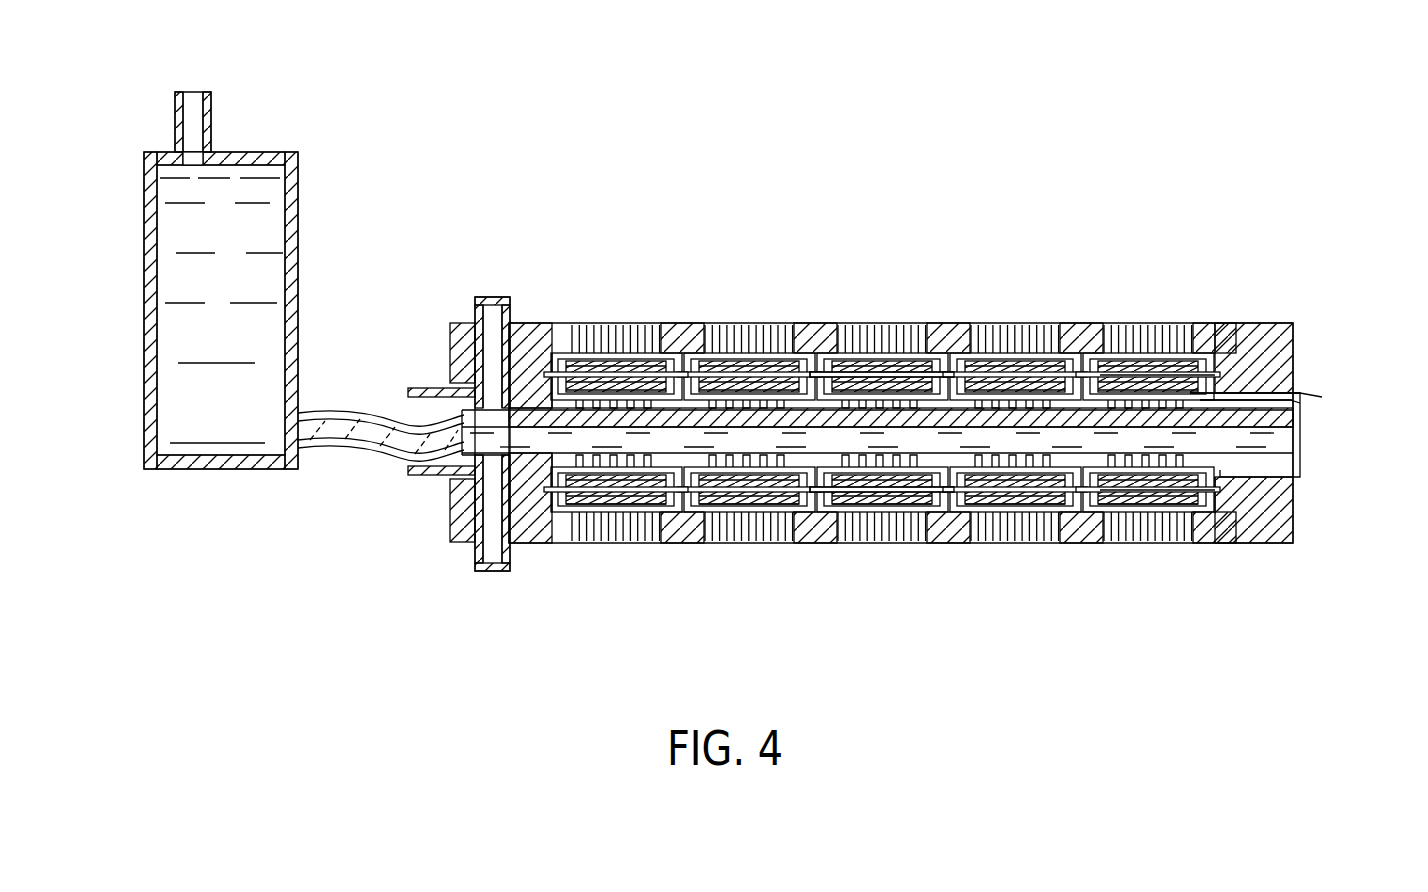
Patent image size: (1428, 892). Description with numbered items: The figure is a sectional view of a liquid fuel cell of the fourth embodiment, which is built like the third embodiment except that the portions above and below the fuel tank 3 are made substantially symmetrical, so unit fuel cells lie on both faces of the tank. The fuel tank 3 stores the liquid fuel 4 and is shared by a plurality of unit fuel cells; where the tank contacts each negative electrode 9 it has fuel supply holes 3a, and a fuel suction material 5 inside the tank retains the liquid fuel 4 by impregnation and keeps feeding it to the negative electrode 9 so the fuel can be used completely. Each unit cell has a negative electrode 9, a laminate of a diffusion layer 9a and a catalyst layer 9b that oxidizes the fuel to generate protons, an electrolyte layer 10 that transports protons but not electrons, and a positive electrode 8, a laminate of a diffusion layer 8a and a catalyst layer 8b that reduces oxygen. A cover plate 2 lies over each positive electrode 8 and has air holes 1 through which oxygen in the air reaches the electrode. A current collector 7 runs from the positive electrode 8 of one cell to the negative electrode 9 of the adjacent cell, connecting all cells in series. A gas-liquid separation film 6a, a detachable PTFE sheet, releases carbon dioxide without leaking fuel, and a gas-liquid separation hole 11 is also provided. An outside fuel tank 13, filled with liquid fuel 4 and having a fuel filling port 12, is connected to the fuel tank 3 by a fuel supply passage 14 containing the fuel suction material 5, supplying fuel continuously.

The air holes 1 is at (603, 323).
The cover plate 2 is at (683, 325).
The fuel tank 3 is at (1295, 498).
The fuel supply holes 3a is at (880, 323).
The liquid fuel 4 is at (168, 215).
The fuel suction material 5 is at (328, 440).
The gas-liquid separation film 6a is at (487, 300).
The current collector 7 is at (420, 390).
The positive electrode 8 is at (1255, 276).
The diffusion layer 8a is at (1155, 323).
The catalyst layer 8b is at (1215, 323).
The negative electrode 9 is at (1427, 420).
The diffusion layer 9a is at (1290, 402).
The catalyst layer 9b is at (1300, 395).
The electrolyte layer 10 is at (1250, 323).
The gas-liquid separation hole 11 is at (478, 335).
The fuel filling port 12 is at (185, 130).
The outside fuel tank 13 is at (150, 292).
The fuel supply passage 14 is at (398, 462).